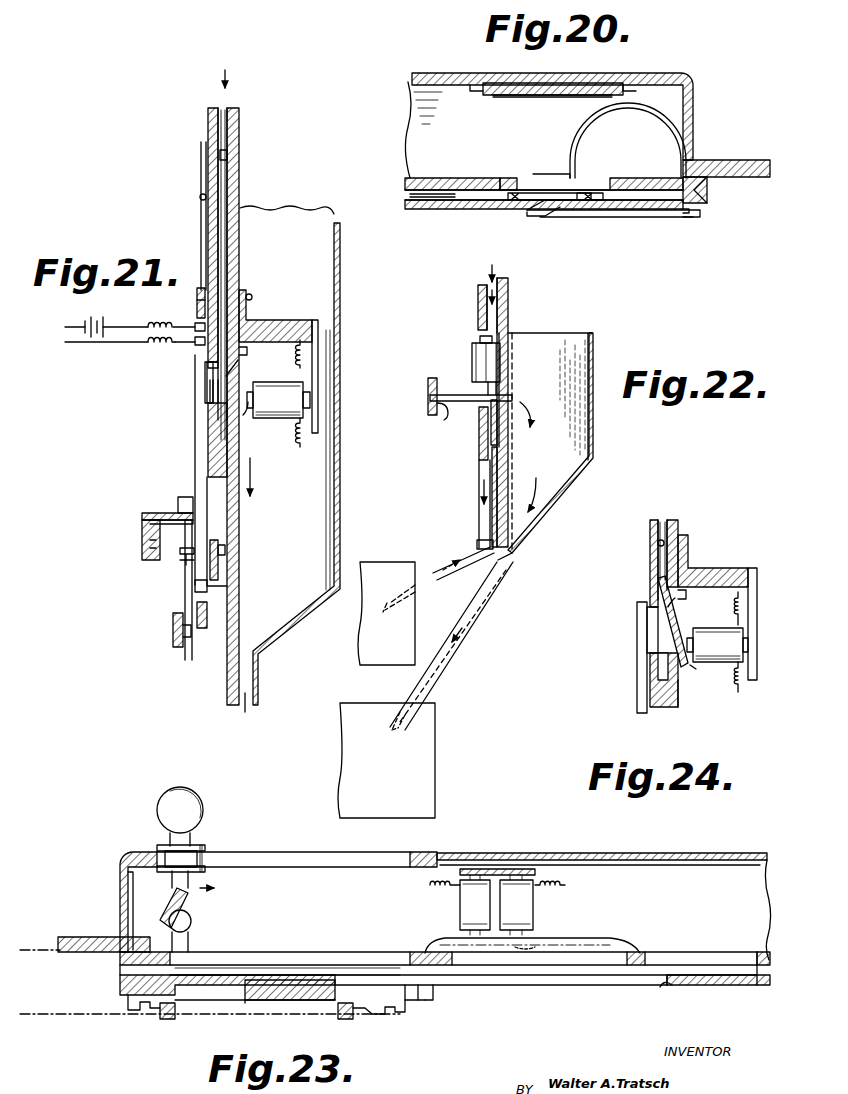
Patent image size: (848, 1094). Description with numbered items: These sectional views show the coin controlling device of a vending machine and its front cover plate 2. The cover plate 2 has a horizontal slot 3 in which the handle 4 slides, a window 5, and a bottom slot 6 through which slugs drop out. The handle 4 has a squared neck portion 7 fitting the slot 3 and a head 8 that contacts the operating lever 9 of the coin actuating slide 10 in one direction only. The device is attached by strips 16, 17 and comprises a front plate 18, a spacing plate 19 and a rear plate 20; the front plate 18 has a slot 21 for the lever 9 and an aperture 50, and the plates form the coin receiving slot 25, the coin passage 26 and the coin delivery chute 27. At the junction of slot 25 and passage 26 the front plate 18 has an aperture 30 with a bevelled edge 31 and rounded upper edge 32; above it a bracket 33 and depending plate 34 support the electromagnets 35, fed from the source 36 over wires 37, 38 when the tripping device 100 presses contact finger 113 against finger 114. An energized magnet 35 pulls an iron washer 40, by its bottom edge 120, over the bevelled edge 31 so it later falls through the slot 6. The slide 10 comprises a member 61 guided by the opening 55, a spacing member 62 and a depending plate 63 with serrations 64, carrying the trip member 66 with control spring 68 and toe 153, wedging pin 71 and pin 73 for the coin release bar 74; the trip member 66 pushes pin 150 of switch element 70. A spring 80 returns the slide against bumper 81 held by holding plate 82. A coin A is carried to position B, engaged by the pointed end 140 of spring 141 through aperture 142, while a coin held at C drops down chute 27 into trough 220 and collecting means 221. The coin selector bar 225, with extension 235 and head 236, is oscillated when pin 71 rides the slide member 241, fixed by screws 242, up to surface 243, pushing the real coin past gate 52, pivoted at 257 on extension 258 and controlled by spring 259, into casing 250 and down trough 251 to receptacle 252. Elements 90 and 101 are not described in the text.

In FIG. 20, the front cover plate 2 is at (437, 73).
In FIG. 21, the front cover plate 2 is at (340, 243).
In FIG. 23, the front cover plate 2 is at (608, 852).
In FIG. 23, the horizontally disposed slot 3 is at (292, 855).
In FIG. 23, the handle 4 is at (165, 803).
In FIG. 20, the window 5 is at (520, 83).
In FIG. 21, the centrally disposed slot 6 is at (258, 682).
In FIG. 23, the centrally disposed slot 6 is at (616, 938).
In FIG. 23, the squared neck portion 7 is at (160, 849).
In FIG. 23, the head 8 is at (164, 914).
In FIG. 23, the operating lever 9 is at (190, 937).
In FIG. 23, the coin actuating slide 10 is at (228, 968).
In FIG. 23, the strip 16 is at (58, 942).
In FIG. 20, the strip 17 is at (770, 170).
In FIG. 20, the front plate 18 is at (405, 184).
In FIG. 21, the front plate 18 is at (239, 120).
In FIG. 22, the front plate 18 is at (508, 284).
In FIG. 24, the front plate 18 is at (677, 520).
In FIG. 23, the front plate 18 is at (120, 960).
In FIG. 20, the spacing plate 19 is at (405, 193).
In FIG. 21, the spacing plate 19 is at (225, 112).
In FIG. 22, the spacing plate 19 is at (493, 280).
In FIG. 24, the spacing plate 19 is at (666, 519).
In FIG. 23, the spacing plate 19 is at (120, 975).
In FIG. 20, the rear plate 20 is at (405, 206).
In FIG. 21, the rear plate 20 is at (208, 115).
In FIG. 22, the rear plate 20 is at (478, 282).
In FIG. 24, the rear plate 20 is at (650, 526).
In FIG. 23, the rear plate 20 is at (120, 982).
In FIG. 23, the longitudinally disposed slot 21 is at (270, 960).
In FIG. 21, the coin receiving slot 25 is at (230, 182).
In FIG. 24, the coin receiving slot 25 is at (657, 541).
In FIG. 20, the coin passage 26 is at (457, 196).
In FIG. 20, the coin delivery chute 27 is at (684, 208).
In FIG. 22, the coin delivery chute 27 is at (502, 315).
In FIG. 24, the aperture 30 is at (672, 645).
In FIG. 21, the bevelled edge 31 is at (242, 428).
In FIG. 24, the bevelled edge 31 is at (681, 687).
In FIG. 21, the rounded upper edge 32 is at (250, 352).
In FIG. 24, the rounded upper edge 32 is at (686, 597).
In FIG. 21, the bracket 33 is at (276, 332).
In FIG. 24, the bracket 33 is at (718, 568).
In FIG. 21, the depending plate 34 is at (320, 360).
In FIG. 24, the depending plate 34 is at (758, 597).
In FIG. 23, the depending plate 34 is at (537, 873).
In FIG. 21, the electromagnets 35 is at (286, 392).
In FIG. 24, the electromagnets 35 is at (724, 630).
In FIG. 23, the electromagnets 35 is at (510, 906).
In FIG. 21, the source 36 is at (96, 316).
In FIG. 21, the wire 37 is at (68, 326).
In FIG. 24, the wire 37 is at (738, 592).
In FIG. 23, the wire 37 is at (430, 885).
In FIG. 21, the wire 38 is at (85, 343).
In FIG. 24, the wire 38 is at (742, 690).
In FIG. 23, the wire 38 is at (568, 886).
In FIG. 21, the iron washer 40 is at (248, 418).
In FIG. 24, the iron washer 40 is at (668, 610).
In FIG. 23, the iron washer 40 is at (543, 940).
In FIG. 20, the aperture 50 is at (506, 180).
In FIG. 23, the aperture 50 is at (760, 956).
In FIG. 22, the gate 52 is at (504, 424).
In FIG. 23, the longitudinally disposed opening 55 is at (665, 986).
In FIG. 24, the member 61 is at (660, 672).
In FIG. 23, the member 61 is at (406, 1006).
In FIG. 21, the spacing member 62 is at (207, 386).
In FIG. 24, the spacing member 62 is at (647, 622).
In FIG. 23, the spacing member 62 is at (420, 1002).
In FIG. 21, the depending plate 63 is at (200, 405).
In FIG. 24, the depending plate 63 is at (638, 688).
In FIG. 23, the depending plate 63 is at (434, 1000).
In FIG. 21, the serrations 64 is at (210, 592).
In FIG. 21, the trip member 66 is at (195, 594).
In FIG. 21, the control spring 68 is at (182, 565).
In FIG. 21, the electric switch element 70 is at (178, 646).
In FIG. 21, the wedging pin 71 is at (186, 498).
In FIG. 21, the pin 73 is at (226, 550).
In FIG. 21, the coin release bar 74 is at (218, 566).
In FIG. 23, the spring 80 is at (165, 1020).
In FIG. 23, the bumper 81 is at (332, 1005).
In FIG. 23, the holding plate 82 is at (245, 993).
In FIG. 21, the pin 90 is at (200, 196).
In FIG. 21, the tripping device 100 is at (199, 290).
In FIG. 21, the contact 101 is at (199, 306).
In FIG. 21, the electrical contact finger 113 is at (195, 326).
In FIG. 21, the electrical contact finger 114 is at (195, 342).
In FIG. 24, the bottom edge 120 is at (688, 672).
In FIG. 20, the pointed end 140 is at (553, 170).
In FIG. 20, the spring 141 is at (635, 217).
In FIG. 20, the aperture 142 is at (556, 212).
In FIG. 21, the pin 150 is at (195, 634).
In FIG. 21, the toe 153 is at (185, 658).
In FIG. 22, the trough 220 is at (466, 548).
In FIG. 22, the collecting means 221 is at (384, 562).
In FIG. 21, the coin selector bar 225 is at (150, 560).
In FIG. 22, the coin selector bar 225 is at (430, 378).
In FIG. 22, the extension 235 is at (444, 418).
In FIG. 22, the head 236 is at (480, 404).
In FIG. 21, the slide member 241 is at (172, 512).
In FIG. 21, the screws 242 is at (142, 533).
In FIG. 21, the surface 243 is at (178, 512).
In FIG. 20, the cylindrical casing 250 is at (604, 122).
In FIG. 22, the cylindrical casing 250 is at (593, 437).
In FIG. 22, the trough 251 is at (492, 597).
In FIG. 22, the coin receptacle 252 is at (437, 735).
In FIG. 22, the pivot 257 is at (481, 338).
In FIG. 22, the extension 258 is at (477, 356).
In FIG. 22, the spring 259 is at (482, 396).
In FIG. 21, the coin A is at (242, 360).
In FIG. 20, the coin position B is at (596, 192).
In FIG. 22, the coin position C is at (480, 436).